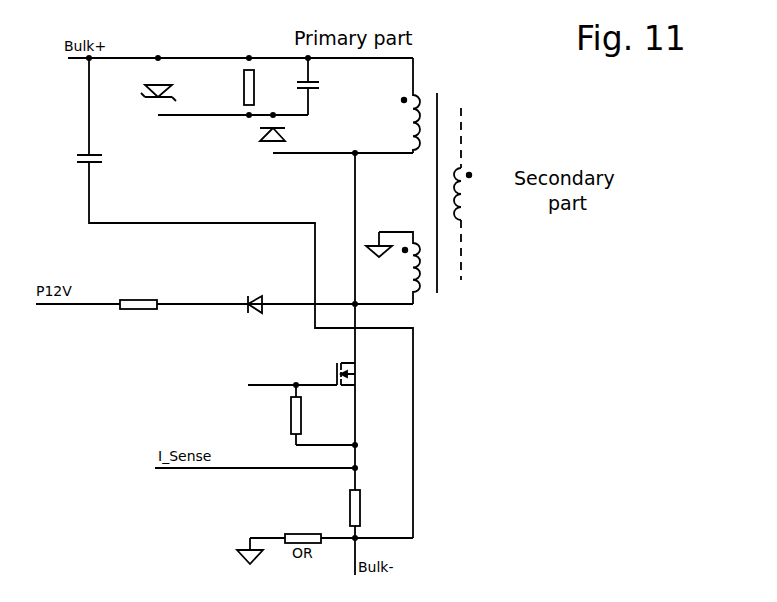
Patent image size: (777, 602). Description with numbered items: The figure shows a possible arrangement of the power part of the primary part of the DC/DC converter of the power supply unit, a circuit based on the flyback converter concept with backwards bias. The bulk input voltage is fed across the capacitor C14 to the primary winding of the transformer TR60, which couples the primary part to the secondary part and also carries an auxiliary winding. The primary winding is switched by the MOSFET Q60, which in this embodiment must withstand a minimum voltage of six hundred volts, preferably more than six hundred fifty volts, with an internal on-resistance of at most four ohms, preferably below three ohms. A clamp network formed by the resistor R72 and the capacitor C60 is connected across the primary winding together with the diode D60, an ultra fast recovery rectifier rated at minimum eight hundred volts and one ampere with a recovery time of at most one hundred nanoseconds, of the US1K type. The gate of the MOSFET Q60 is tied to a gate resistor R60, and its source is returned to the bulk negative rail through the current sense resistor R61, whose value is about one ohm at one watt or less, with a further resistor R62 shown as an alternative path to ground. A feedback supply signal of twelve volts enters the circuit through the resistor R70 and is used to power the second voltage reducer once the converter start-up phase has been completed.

The bulk capacitor C14 is at (106, 160).
The clamp resistor R72 is at (231, 87).
The clamp capacitor C60 is at (325, 86).
The ultra fast recovery rectifier diode D60 is at (289, 136).
The transformer TR60 is at (419, 181).
The resistor R70 is at (138, 294).
The MOSFET Q60 is at (362, 374).
The gate resistor R60 is at (277, 415).
The current sense resistor R61 is at (371, 508).
The resistor R62 is at (279, 540).